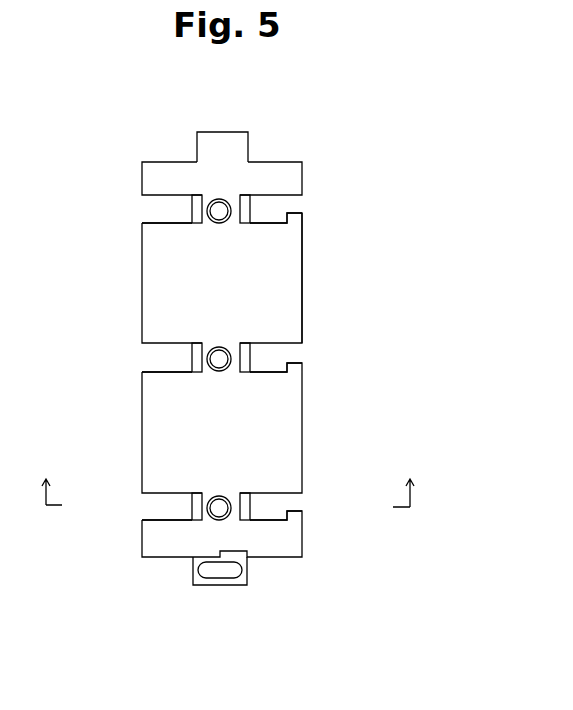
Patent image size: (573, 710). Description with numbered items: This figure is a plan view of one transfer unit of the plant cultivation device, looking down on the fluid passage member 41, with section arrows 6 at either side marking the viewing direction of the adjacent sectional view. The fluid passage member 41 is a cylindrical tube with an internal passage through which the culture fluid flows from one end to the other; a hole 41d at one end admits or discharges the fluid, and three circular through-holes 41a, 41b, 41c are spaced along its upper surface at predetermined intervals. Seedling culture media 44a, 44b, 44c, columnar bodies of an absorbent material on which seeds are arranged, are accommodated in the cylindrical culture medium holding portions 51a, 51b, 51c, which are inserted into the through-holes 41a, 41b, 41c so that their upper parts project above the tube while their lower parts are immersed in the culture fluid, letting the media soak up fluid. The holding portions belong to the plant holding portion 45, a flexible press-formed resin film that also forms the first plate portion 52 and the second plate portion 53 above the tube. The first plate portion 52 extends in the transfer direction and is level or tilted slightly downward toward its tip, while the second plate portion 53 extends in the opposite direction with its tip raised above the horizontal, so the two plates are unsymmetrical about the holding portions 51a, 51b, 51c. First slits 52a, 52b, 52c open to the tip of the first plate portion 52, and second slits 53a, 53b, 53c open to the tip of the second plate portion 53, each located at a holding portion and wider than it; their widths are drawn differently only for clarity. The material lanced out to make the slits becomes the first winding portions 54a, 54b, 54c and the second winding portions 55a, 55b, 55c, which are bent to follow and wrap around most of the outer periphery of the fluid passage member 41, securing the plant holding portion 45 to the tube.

The section line / viewing direction of Fig. 6 is at (228, 480).
The fluid passage member 41 is at (193, 567).
The through-hole 41a is at (227, 495).
The through-hole 41b is at (227, 345).
The through-hole 41c is at (227, 197).
The hole 41d is at (217, 577).
The seedling culture medium 44a is at (212, 522).
The seedling culture medium 44b is at (213, 372).
The seedling culture medium 44c is at (213, 223).
The plant holding portion 45 is at (250, 130).
The culture medium holding portion 51a is at (226, 516).
The culture medium holding portion 51b is at (226, 366).
The culture medium holding portion 51c is at (226, 217).
The first plate portion 52 is at (302, 320).
The first slit 52a is at (288, 513).
The first slit 52b is at (288, 365).
The first slit 52c is at (288, 216).
The second plate portion 53 is at (142, 310).
The second slit 53a is at (156, 520).
The second slit 53b is at (157, 372).
The second slit 53c is at (157, 222).
The first winding portion 54a is at (253, 504).
The first winding portion 54b is at (252, 359).
The first winding portion 54c is at (252, 209).
The second winding portion 55a is at (190, 505).
The second winding portion 55b is at (190, 356).
The second winding portion 55c is at (190, 210).